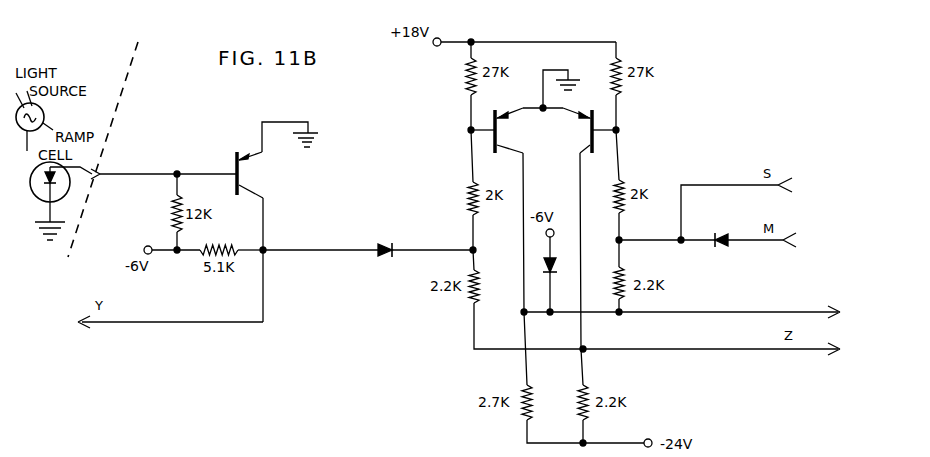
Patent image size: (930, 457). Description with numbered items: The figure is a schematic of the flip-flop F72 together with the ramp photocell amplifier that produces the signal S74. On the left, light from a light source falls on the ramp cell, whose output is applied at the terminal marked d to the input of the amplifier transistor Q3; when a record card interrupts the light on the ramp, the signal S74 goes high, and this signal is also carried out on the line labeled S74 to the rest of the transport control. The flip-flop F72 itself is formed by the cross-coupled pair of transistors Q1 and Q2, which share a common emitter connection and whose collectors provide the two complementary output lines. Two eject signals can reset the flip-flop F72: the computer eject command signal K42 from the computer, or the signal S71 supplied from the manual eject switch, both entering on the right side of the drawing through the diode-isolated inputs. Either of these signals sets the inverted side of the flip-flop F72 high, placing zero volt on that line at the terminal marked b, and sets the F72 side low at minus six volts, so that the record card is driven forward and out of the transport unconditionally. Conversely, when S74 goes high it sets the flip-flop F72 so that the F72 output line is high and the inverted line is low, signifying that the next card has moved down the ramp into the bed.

The transistor Q1 is at (498, 130).
The transistor Q2 is at (588, 130).
The transistor Q3 is at (277, 160).
The ramp photocell signal S74 is at (150, 323).
The manual eject switch signal S71 is at (722, 210).
The computer eject command signal K42 is at (753, 241).
The flip-flop F72 is at (847, 283).
The terminal d is at (138, 164).
The terminal b is at (787, 297).